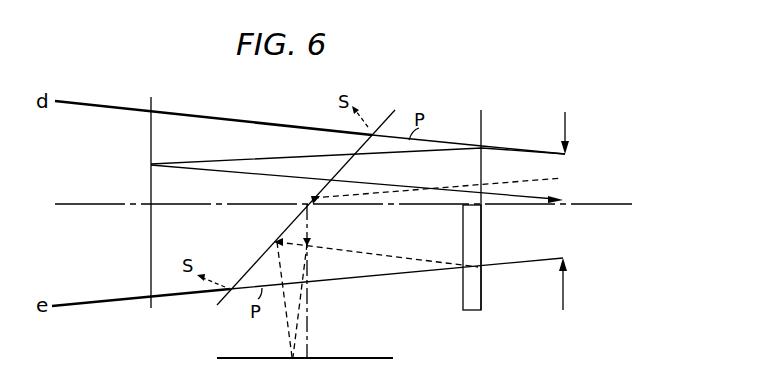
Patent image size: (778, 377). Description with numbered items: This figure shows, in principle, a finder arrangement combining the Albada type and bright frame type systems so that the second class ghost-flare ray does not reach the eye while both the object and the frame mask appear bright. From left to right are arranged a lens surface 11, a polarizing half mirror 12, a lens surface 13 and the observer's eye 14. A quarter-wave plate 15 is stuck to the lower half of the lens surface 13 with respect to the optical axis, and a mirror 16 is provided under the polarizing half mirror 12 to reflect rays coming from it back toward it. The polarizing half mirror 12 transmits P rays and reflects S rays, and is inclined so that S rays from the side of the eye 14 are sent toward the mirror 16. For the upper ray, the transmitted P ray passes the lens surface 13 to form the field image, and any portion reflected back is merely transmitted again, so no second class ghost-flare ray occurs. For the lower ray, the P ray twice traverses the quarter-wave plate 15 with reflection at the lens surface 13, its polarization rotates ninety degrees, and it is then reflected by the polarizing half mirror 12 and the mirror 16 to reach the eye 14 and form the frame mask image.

The lens surface 11 is at (152, 102).
The polarizing half mirror 12 is at (389, 114).
The lens surface 13 is at (483, 118).
The observer's eye 14 is at (567, 118).
The quarter-wave plate 15 is at (462, 284).
The mirror 16 is at (217, 356).